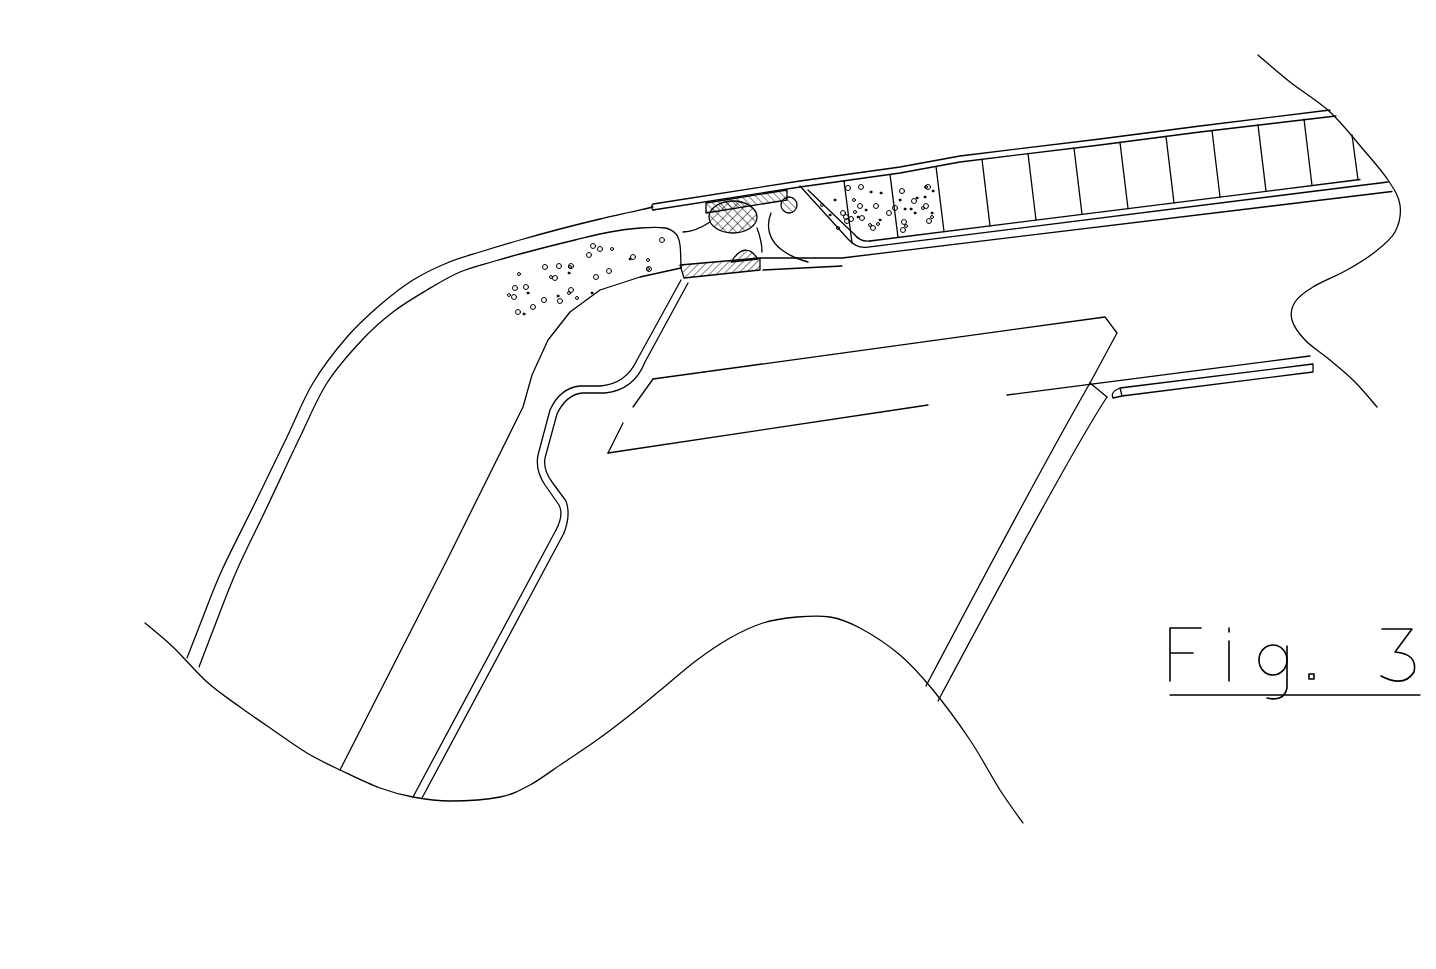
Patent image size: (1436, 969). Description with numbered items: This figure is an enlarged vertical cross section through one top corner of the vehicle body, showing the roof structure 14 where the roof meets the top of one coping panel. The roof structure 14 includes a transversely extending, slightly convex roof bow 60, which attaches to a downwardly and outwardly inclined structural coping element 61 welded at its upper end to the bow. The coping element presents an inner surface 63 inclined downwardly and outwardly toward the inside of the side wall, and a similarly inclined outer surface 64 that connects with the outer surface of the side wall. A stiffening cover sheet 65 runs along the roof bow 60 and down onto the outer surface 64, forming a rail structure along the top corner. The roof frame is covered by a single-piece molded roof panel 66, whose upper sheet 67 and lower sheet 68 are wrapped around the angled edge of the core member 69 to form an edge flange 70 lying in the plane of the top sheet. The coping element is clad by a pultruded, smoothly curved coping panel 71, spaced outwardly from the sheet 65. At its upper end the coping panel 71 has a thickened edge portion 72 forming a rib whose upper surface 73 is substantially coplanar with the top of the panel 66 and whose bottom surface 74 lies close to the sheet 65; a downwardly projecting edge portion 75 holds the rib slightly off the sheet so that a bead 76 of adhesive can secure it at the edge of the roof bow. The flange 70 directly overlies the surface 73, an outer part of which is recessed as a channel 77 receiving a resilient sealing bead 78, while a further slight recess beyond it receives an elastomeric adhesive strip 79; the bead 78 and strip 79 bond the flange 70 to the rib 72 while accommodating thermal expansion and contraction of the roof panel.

The roof structure 14 is at (1219, 342).
The roof bow 60 is at (1285, 350).
The structural coping element 61 is at (980, 547).
The inner surface 63 is at (988, 609).
The outer surface 64 is at (502, 651).
The stiffening cover sheet 65 is at (545, 535).
The roof panel 66 is at (968, 172).
The upper sheet 67 is at (850, 175).
The lower sheet 68 is at (937, 238).
The core member 69 is at (918, 180).
The edge flange 70 is at (748, 200).
The coping panel 71 is at (450, 264).
The edge portion 72 is at (673, 217).
The upper surface 73 is at (686, 223).
The bottom surface 74 is at (763, 258).
The downwardly projecting edge portion 75 is at (800, 263).
The bead of adhesive 76 is at (717, 259).
The channel 77 is at (790, 197).
The resilient sealing bead 78 is at (725, 200).
The elastomeric adhesive strip 79 is at (778, 198).